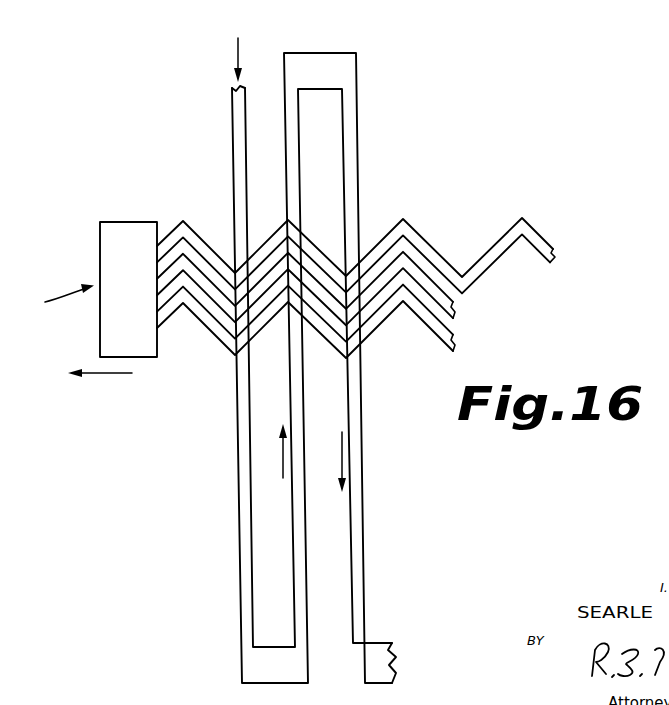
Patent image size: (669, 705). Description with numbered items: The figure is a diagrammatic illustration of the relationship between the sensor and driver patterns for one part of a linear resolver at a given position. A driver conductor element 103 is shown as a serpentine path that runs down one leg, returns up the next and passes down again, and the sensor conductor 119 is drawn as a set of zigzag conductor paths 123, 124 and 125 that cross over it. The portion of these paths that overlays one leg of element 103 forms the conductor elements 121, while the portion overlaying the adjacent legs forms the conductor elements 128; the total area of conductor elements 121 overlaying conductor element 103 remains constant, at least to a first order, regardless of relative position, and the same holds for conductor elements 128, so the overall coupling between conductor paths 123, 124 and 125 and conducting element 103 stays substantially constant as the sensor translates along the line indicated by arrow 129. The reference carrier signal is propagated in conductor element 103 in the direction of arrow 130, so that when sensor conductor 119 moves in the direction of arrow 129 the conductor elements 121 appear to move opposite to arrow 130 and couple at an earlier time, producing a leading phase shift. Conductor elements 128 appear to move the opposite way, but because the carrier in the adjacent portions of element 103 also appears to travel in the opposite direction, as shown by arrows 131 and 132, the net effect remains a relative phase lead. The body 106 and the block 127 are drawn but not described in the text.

The conductor element 103 is at (290, 212).
The U-shaped tubular conduit 106 is at (300, 351).
The sensor conductor 119 is at (66, 289).
The conductor elements 121 is at (372, 292).
The conductor path 123 is at (553, 250).
The conductor path 124 is at (452, 302).
The conductor path 125 is at (452, 338).
The header 127 is at (127, 230).
The conductor elements 128 is at (372, 292).
The arrow 129 is at (112, 374).
The arrow 130 is at (236, 52).
The arrow 131 is at (283, 458).
The arrow 132 is at (342, 460).